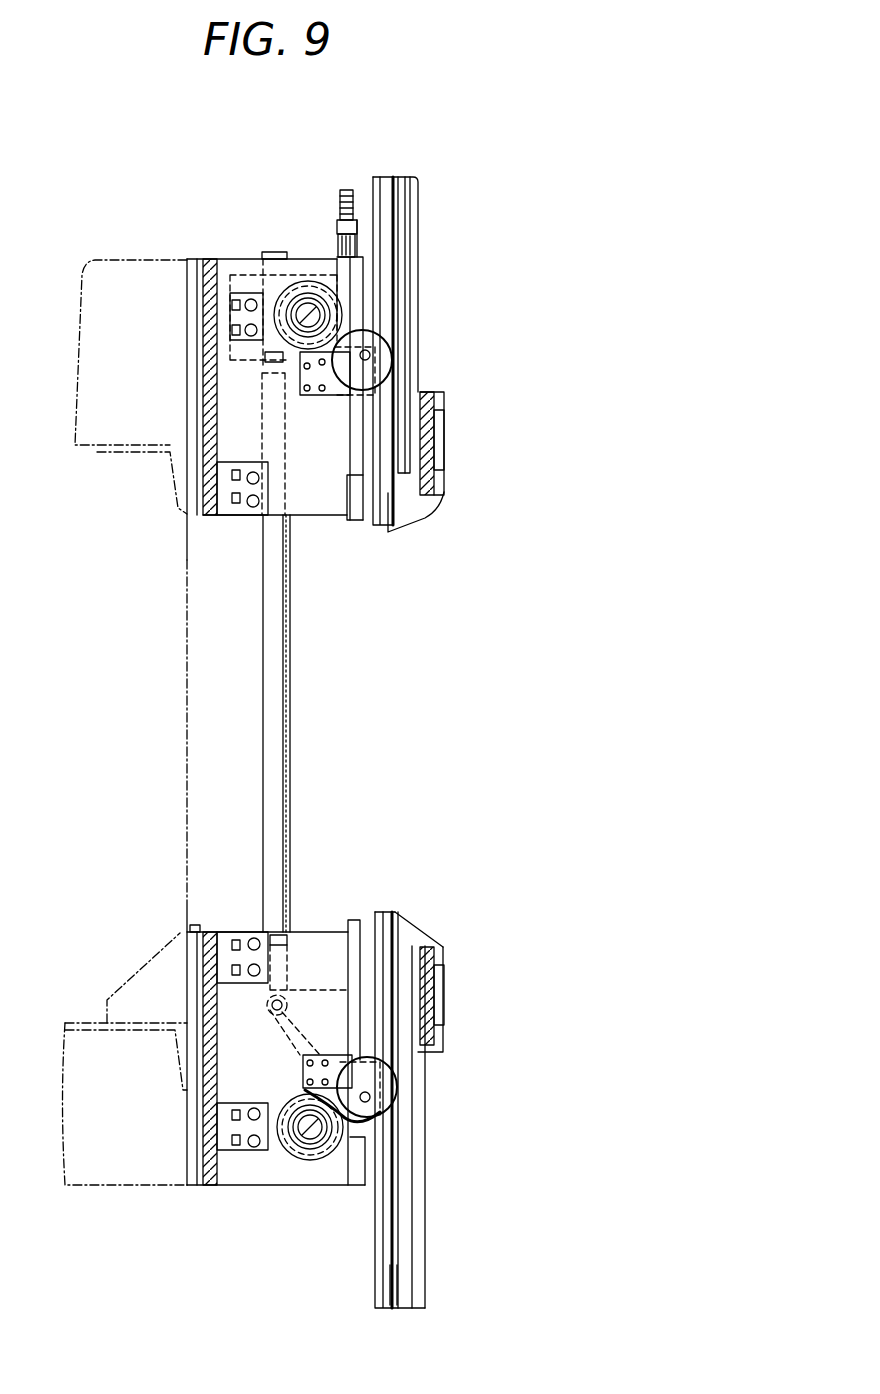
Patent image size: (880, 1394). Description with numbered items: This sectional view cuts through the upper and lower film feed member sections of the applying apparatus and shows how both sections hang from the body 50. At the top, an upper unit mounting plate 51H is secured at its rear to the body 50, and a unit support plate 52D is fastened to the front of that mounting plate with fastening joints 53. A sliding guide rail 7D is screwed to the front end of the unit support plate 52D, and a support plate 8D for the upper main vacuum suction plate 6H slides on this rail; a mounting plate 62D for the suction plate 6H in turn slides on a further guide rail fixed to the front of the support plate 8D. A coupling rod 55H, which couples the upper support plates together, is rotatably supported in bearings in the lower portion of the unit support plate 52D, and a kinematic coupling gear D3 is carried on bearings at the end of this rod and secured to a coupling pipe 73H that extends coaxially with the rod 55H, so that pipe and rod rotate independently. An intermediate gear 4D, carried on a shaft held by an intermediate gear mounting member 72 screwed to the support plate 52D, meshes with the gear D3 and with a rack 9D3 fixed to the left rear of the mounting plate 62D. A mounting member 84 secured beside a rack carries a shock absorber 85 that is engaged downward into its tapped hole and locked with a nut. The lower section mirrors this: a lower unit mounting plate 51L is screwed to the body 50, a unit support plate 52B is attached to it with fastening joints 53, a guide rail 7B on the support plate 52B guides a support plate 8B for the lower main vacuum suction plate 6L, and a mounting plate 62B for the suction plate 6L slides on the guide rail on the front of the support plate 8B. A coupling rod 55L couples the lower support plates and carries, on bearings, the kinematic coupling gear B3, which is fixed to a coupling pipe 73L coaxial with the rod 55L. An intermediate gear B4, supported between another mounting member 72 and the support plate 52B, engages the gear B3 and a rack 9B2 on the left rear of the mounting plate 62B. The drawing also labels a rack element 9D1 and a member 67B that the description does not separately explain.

The body of the applying apparatus 50 is at (93, 455).
The upper unit mounting plate 51H is at (208, 297).
The lower unit mounting plate 51L is at (208, 970).
The unit support plate 52D is at (316, 492).
The unit support plate 52B is at (325, 953).
The fastening joint 53 is at (223, 297).
The coupling rod 55H is at (270, 358).
The coupling rod 55L is at (303, 1135).
The connecting rod 67B is at (275, 697).
The intermediate gear mounting member 72 is at (335, 398).
The main vacuum suction plate coupling pipe 73H is at (330, 278).
The main vacuum suction plate coupling pipe 73L is at (307, 1150).
The mounting member for shock absorber 84 is at (357, 240).
The shock absorber 85 is at (346, 190).
The guide element 9D1 is at (277, 250).
The rack 9D3 is at (403, 197).
The rack 9B2 is at (408, 1228).
The support plate 8D is at (377, 222).
The support plate 8B is at (382, 1302).
The sliding guide rail 7D is at (338, 282).
The sliding guide rail 7B is at (392, 1200).
The upper main vacuum suction plate 6H is at (413, 505).
The lower main vacuum suction plate 6L is at (412, 935).
The mounting plate 62D is at (412, 437).
The mounting plate 62B is at (417, 988).
The intermediate gear 4D is at (395, 328).
The intermediate gear B4 is at (417, 1073).
The main vacuum suction plate kinematic coupling gear D3 is at (298, 352).
The main vacuum suction plate kinematic coupling gear B3 is at (308, 1163).